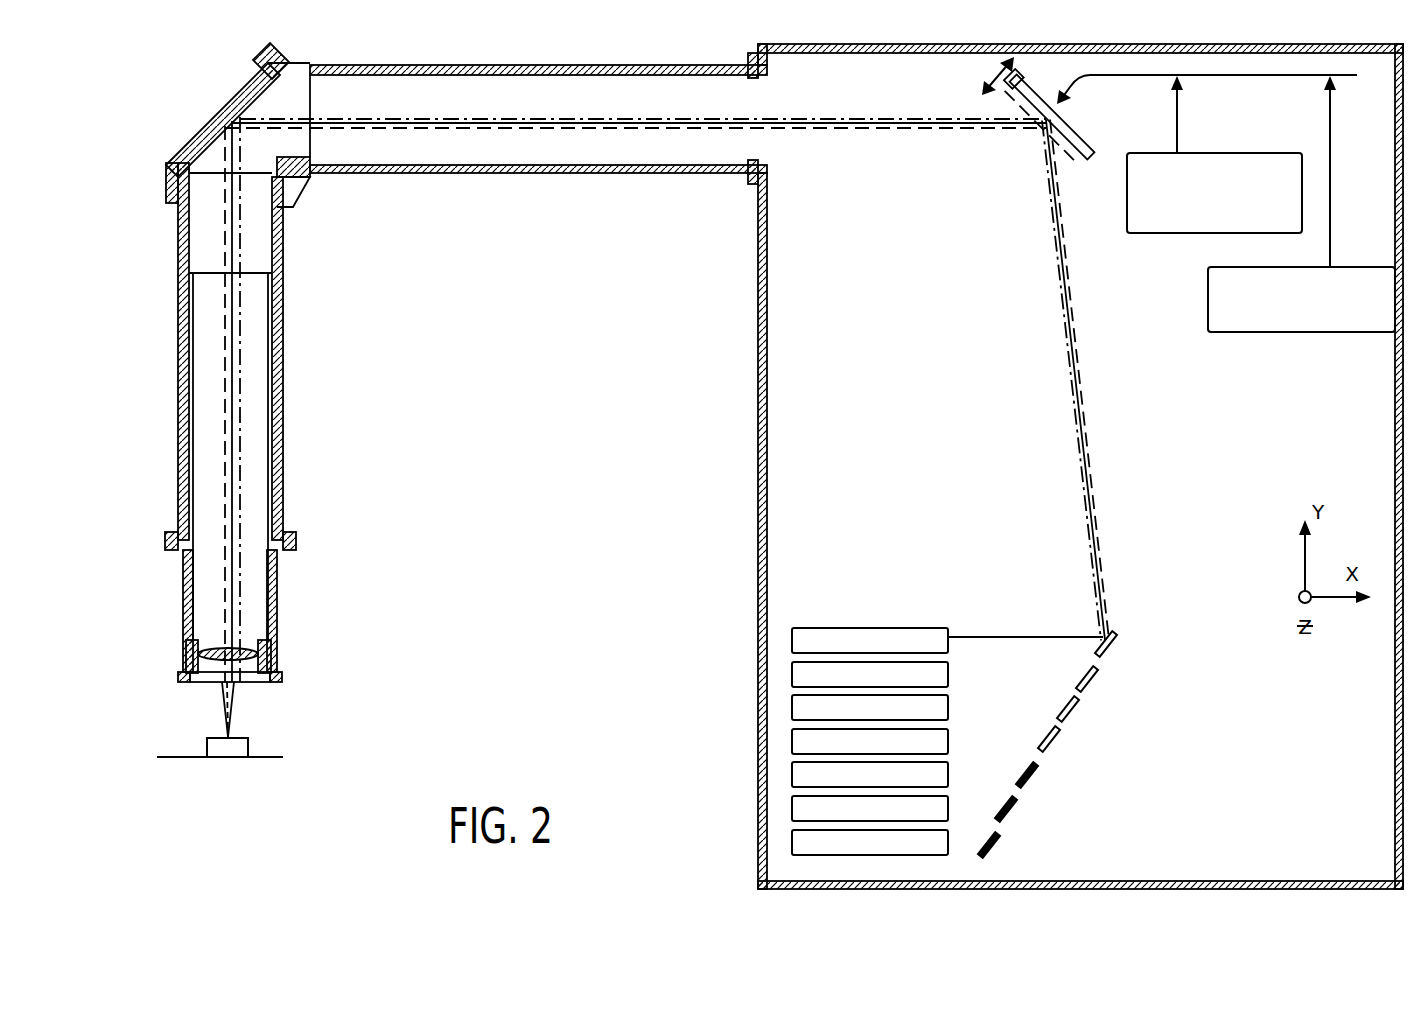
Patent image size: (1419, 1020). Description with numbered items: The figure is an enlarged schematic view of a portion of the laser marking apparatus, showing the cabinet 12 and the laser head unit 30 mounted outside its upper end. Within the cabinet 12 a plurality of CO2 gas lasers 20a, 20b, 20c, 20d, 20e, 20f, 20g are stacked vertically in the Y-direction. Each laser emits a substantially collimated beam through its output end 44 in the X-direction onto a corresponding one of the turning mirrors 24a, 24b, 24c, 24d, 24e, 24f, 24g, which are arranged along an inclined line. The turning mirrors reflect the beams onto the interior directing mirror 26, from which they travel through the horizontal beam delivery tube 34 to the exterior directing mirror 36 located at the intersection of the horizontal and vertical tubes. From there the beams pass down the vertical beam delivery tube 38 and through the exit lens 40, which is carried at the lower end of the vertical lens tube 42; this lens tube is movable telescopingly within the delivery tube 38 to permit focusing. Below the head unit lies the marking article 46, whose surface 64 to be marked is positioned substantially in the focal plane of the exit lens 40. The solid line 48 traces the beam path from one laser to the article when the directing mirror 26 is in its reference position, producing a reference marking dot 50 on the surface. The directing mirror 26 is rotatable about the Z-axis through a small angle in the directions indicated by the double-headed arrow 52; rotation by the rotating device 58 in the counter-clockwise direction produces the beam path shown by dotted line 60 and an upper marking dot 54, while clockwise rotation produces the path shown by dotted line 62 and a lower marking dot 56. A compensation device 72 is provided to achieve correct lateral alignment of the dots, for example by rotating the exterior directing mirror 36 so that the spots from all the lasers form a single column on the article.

The cabinet 12 is at (758, 357).
The laser 20a is at (800, 640).
The laser 20b is at (800, 678).
The laser 20c is at (800, 713).
The laser 20d is at (800, 748).
The laser 20e is at (800, 782).
The laser 20f is at (800, 815).
The laser 20g is at (800, 853).
The turning mirror 24a is at (1116, 642).
The turning mirror 24b is at (1097, 677).
The turning mirror 24c is at (1078, 707).
The turning mirror 24d is at (1059, 737).
The turning mirror 24e is at (1037, 773).
The turning mirror 24f is at (1016, 807).
The turning mirror 24g is at (999, 843).
The interior directing mirror 26 is at (1083, 160).
The laser head unit 30 is at (518, 197).
The horizontal beam delivery tube 34 is at (600, 173).
The exterior directing mirror 36 is at (276, 92).
The vertical beam delivery tube 38 is at (283, 294).
The exit lens 40 is at (262, 648).
The vertical lens tube 42 is at (280, 588).
The output end 44 is at (950, 636).
The marking article 46 is at (250, 749).
The solid line 48 is at (432, 125).
The discrete dot 50 is at (228, 760).
The double-headed arrow 52 is at (992, 80).
The discrete dot 54 is at (215, 758).
The discrete dot 56 is at (237, 758).
The rotating device 58 is at (1186, 234).
The dotted line 60 is at (445, 128).
The dotted line 62 is at (395, 120).
The surface 64 is at (226, 735).
The compensation device 72 is at (1268, 333).